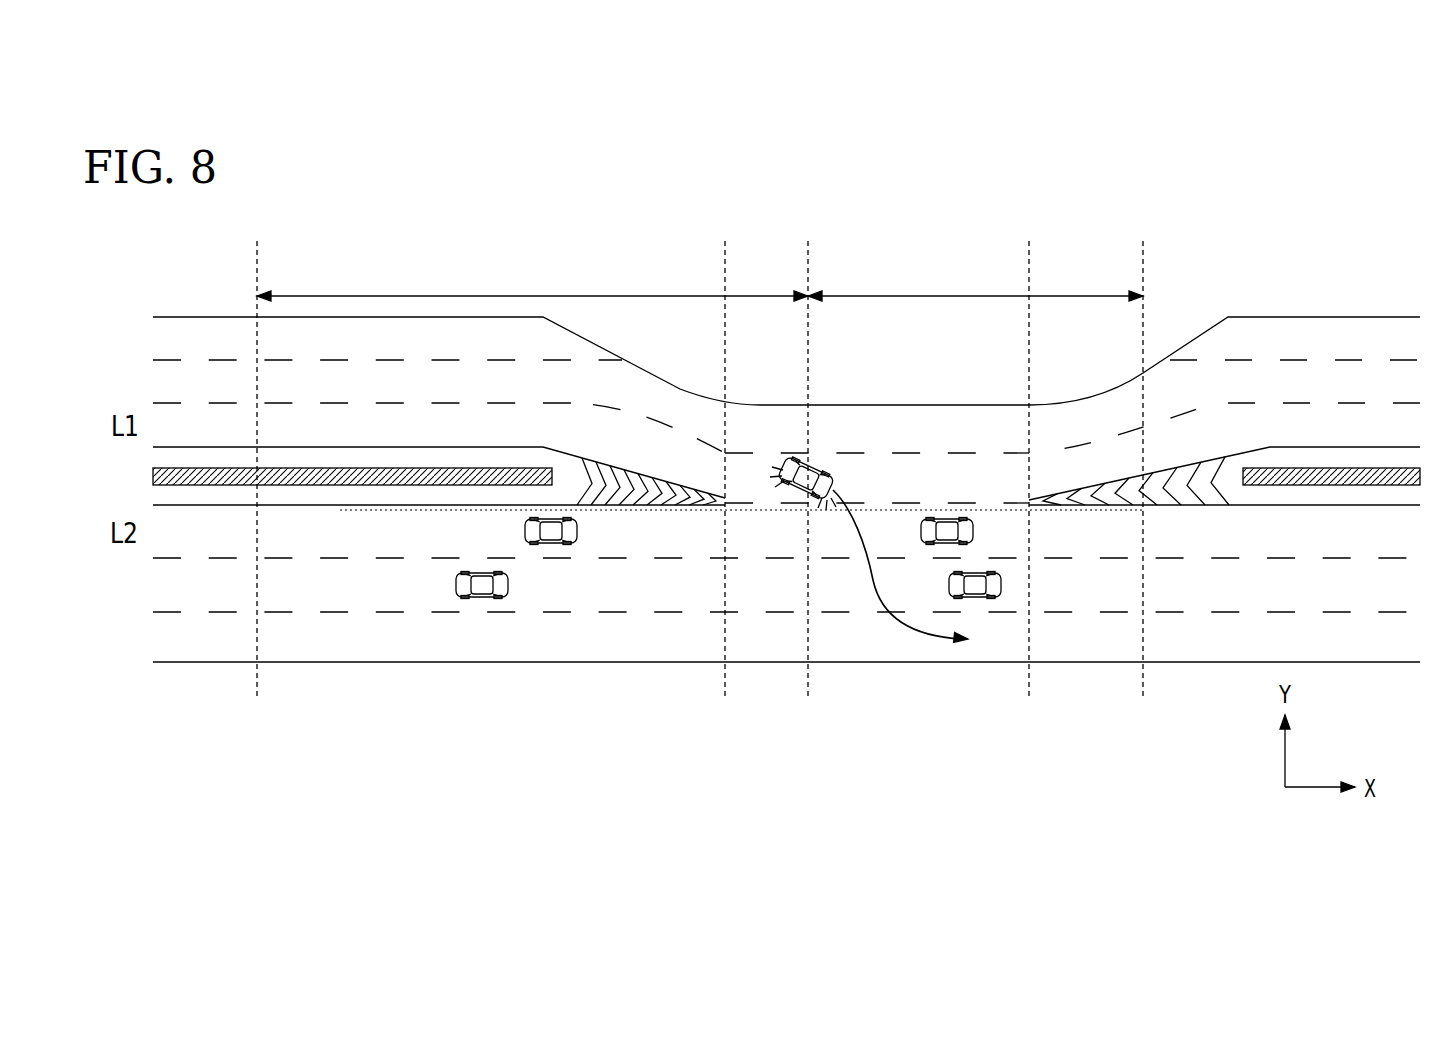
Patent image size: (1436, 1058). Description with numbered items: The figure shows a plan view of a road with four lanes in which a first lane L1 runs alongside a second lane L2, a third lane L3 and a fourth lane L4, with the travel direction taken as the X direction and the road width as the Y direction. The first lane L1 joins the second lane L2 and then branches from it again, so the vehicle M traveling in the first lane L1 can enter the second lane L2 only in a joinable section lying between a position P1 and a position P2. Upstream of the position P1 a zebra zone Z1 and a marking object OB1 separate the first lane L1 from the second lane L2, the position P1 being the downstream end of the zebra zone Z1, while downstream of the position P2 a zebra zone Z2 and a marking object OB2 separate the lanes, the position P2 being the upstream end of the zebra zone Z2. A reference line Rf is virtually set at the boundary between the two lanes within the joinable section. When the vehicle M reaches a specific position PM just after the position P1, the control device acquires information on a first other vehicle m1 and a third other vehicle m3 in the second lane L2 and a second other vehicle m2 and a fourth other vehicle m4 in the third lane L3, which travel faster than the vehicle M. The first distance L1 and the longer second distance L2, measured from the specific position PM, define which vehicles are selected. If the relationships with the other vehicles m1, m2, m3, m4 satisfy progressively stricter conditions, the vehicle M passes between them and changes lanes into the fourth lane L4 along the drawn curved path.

The marking object OB1 is at (200, 477).
The marking object OB2 is at (1324, 475).
The zebra zone Z1 is at (655, 484).
The zebra zone Z2 is at (1102, 494).
The vehicle M is at (818, 463).
The reference line Rf is at (932, 506).
The first other vehicle m1 is at (974, 531).
The second other vehicle m2 is at (524, 531).
The third other vehicle m3 is at (948, 585).
The fourth other vehicle m4 is at (455, 585).
The position P1 is at (725, 452).
The specific position PM is at (808, 452).
The position P2 is at (1029, 452).
The first lane L1 is at (975, 280).
The second lane L2 is at (532, 280).
The third lane L3 is at (765, 587).
The fourth lane L4 is at (765, 637).